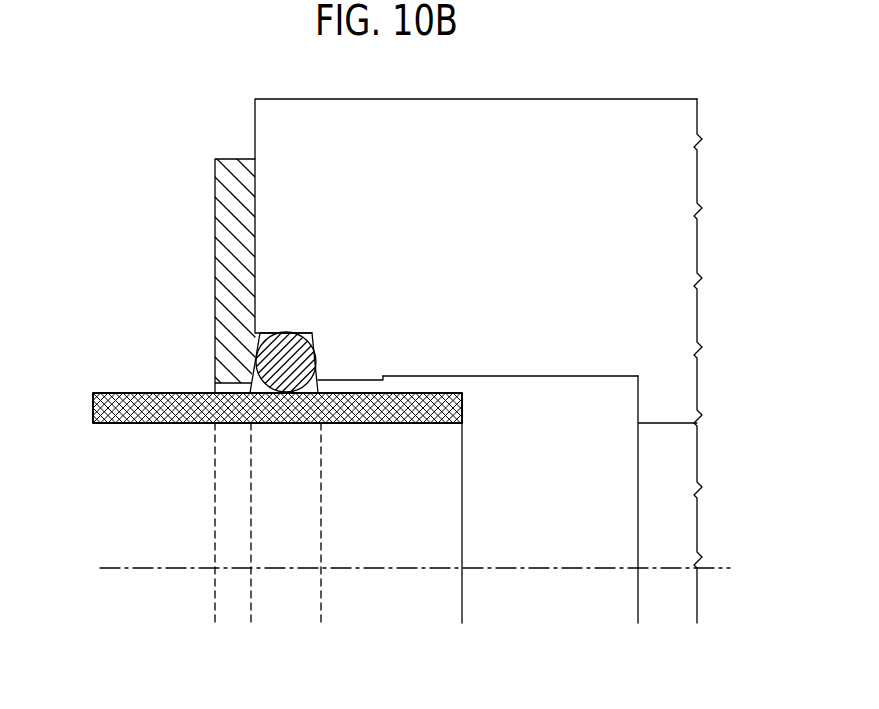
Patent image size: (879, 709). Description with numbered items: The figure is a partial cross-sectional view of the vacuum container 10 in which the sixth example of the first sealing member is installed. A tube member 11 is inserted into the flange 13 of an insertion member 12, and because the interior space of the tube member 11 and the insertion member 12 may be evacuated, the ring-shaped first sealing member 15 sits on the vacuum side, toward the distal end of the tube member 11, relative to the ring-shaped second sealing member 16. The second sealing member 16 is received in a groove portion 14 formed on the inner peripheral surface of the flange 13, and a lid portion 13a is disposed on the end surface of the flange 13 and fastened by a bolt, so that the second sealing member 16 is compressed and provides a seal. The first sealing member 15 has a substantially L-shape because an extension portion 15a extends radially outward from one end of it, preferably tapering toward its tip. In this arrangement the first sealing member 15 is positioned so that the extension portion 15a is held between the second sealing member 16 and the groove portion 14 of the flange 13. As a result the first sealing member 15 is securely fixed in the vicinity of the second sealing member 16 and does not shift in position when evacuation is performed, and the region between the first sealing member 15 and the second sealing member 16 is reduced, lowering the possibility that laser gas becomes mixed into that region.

The electronic device / mounting structure 10 is at (105, 168).
The tube member 11 is at (120, 393).
The insertion member 12 is at (719, 353).
The flange 13 is at (687, 120).
The lid portion 13a is at (232, 195).
The groove portion 14 is at (315, 337).
The first sealing member 15 is at (368, 387).
The extension portion 15a is at (322, 370).
The second sealing member 16 is at (277, 358).